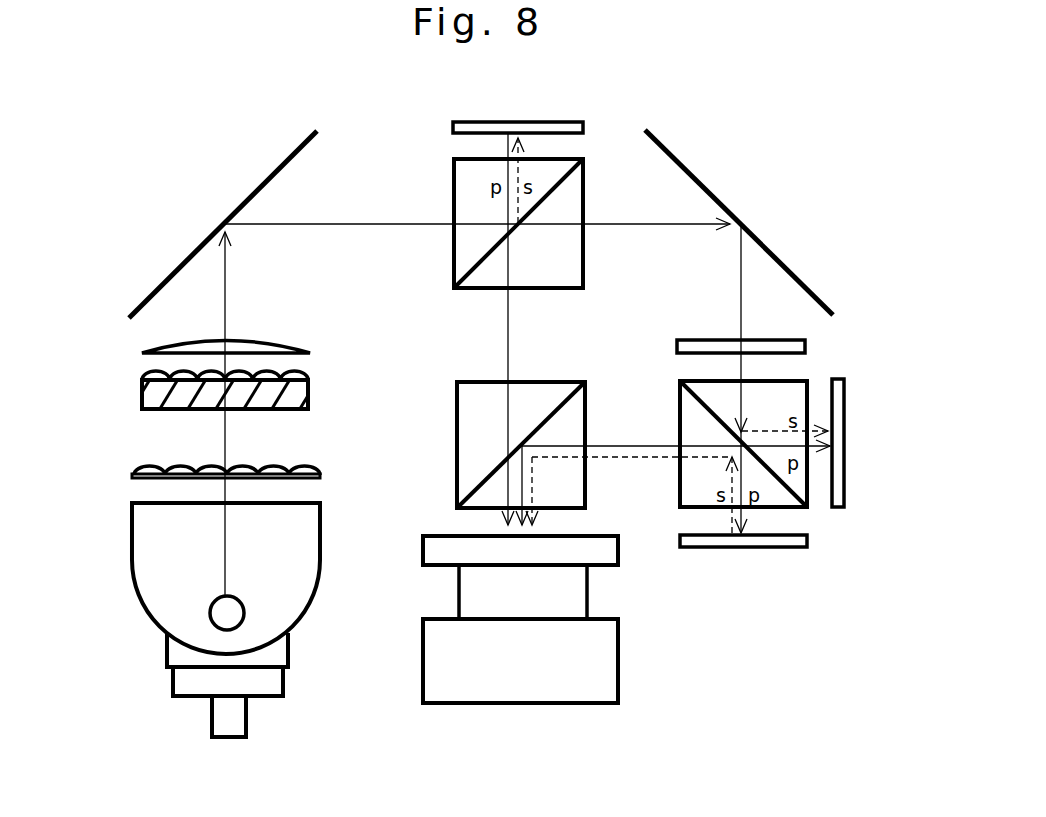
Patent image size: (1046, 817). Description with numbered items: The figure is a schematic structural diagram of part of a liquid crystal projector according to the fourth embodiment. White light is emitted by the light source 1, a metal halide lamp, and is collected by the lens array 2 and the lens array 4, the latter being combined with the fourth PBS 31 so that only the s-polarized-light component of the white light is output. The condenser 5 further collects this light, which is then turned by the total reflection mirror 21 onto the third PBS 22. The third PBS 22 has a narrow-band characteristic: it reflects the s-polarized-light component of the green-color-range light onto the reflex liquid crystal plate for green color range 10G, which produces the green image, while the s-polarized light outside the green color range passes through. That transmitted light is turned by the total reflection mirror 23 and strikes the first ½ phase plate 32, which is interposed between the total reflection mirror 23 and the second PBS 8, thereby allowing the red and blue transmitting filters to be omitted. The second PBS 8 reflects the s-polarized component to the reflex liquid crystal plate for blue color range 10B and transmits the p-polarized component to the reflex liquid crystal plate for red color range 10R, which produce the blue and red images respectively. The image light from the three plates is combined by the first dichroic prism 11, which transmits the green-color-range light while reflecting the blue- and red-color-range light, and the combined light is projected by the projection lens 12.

The light source 1 is at (303, 520).
The lens array 2 is at (318, 470).
The fourth PBS 31 is at (148, 392).
The lens array 4 is at (300, 376).
The condenser 5 is at (268, 345).
The total reflection mirror 21 is at (282, 160).
The total reflection mirror 23 is at (683, 162).
The third PBS 22 is at (464, 170).
The reflex liquid crystal plate for green color range 10G is at (472, 128).
The first dichroic prism 11 is at (471, 392).
The projection lens 12 is at (445, 641).
The first ½ phase plate 32 is at (684, 345).
The second PBS 8 is at (692, 400).
The reflex liquid crystal plate for blue color range 10B is at (840, 400).
The reflex liquid crystal plate for red color range 10R is at (800, 540).